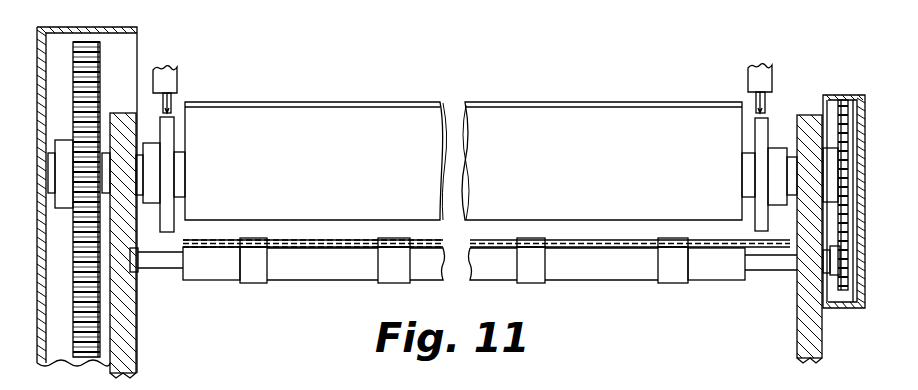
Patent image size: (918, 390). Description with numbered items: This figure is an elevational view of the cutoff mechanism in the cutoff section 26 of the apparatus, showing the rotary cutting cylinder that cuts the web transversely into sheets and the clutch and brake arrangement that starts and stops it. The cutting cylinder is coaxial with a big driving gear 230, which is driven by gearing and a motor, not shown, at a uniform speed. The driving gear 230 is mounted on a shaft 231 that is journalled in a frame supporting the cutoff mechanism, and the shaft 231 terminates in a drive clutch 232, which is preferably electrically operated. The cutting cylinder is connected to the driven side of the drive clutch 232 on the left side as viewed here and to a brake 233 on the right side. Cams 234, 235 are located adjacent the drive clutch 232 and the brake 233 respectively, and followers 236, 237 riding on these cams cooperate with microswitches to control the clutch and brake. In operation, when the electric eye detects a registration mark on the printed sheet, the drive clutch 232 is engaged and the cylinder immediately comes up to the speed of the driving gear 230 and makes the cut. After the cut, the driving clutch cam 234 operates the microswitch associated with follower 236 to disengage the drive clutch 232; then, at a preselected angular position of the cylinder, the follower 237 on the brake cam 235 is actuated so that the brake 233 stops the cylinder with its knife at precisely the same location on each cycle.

The cutoff section 26 is at (639, 28).
The driving gear 230 is at (85, 42).
The shaft 231 is at (104, 162).
The drive clutch 232 is at (152, 173).
The brake 233 is at (776, 172).
The driving clutch cam 234 is at (167, 135).
The brake cam 235 is at (762, 140).
The follower 236 is at (177, 108).
The follower 237 is at (767, 112).